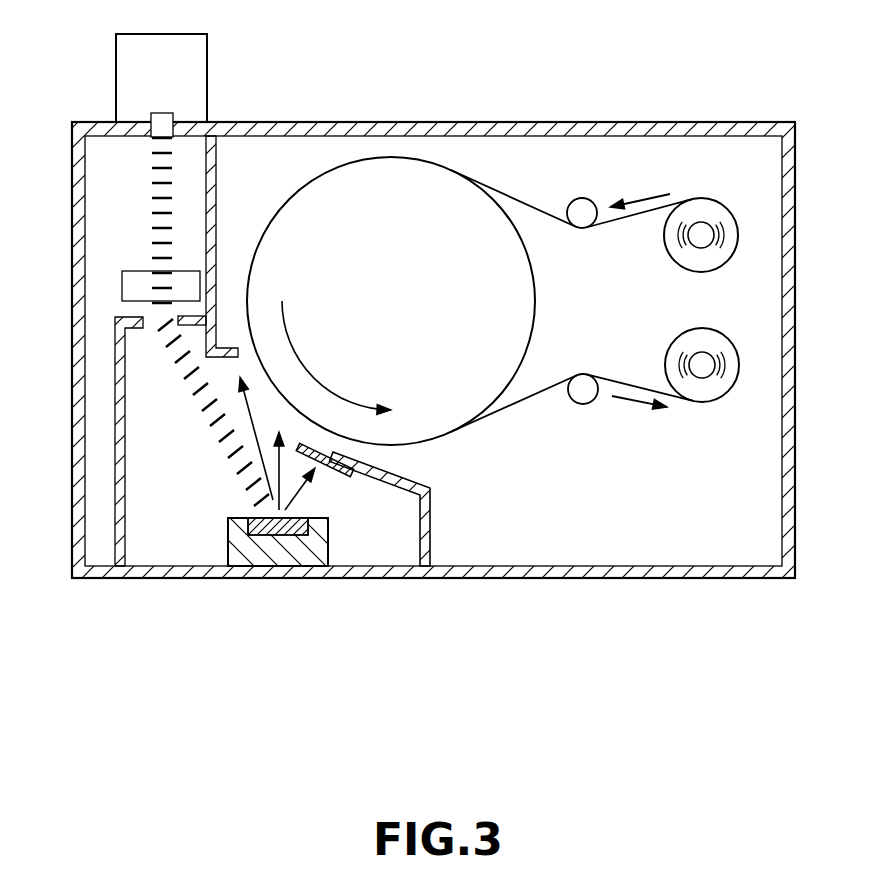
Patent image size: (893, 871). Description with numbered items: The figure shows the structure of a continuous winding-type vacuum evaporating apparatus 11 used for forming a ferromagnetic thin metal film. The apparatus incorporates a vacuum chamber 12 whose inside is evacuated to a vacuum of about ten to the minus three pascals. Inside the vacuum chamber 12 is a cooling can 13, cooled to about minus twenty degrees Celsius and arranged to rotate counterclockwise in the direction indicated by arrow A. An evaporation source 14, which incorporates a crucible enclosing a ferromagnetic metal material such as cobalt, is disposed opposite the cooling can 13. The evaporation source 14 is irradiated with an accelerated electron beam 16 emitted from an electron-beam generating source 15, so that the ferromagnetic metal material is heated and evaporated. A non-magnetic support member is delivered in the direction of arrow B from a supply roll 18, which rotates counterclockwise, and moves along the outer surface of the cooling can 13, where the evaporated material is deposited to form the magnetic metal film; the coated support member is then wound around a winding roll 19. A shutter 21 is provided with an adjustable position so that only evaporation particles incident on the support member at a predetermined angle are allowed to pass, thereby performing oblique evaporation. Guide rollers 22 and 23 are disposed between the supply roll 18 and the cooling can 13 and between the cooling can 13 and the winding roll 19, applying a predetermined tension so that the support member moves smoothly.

The vacuum evaporating apparatus 11 is at (696, 95).
The vacuum chamber 12 is at (693, 548).
The cooling can 13 is at (399, 176).
The evaporation source 14 is at (278, 532).
The electron-beam generating source 15 is at (192, 72).
The electron beam 16 is at (148, 190).
The supply roll 18 is at (727, 237).
The winding roll 19 is at (727, 370).
The shutter 21 is at (343, 473).
The guide roller 22 is at (582, 208).
The guide roller 23 is at (583, 395).